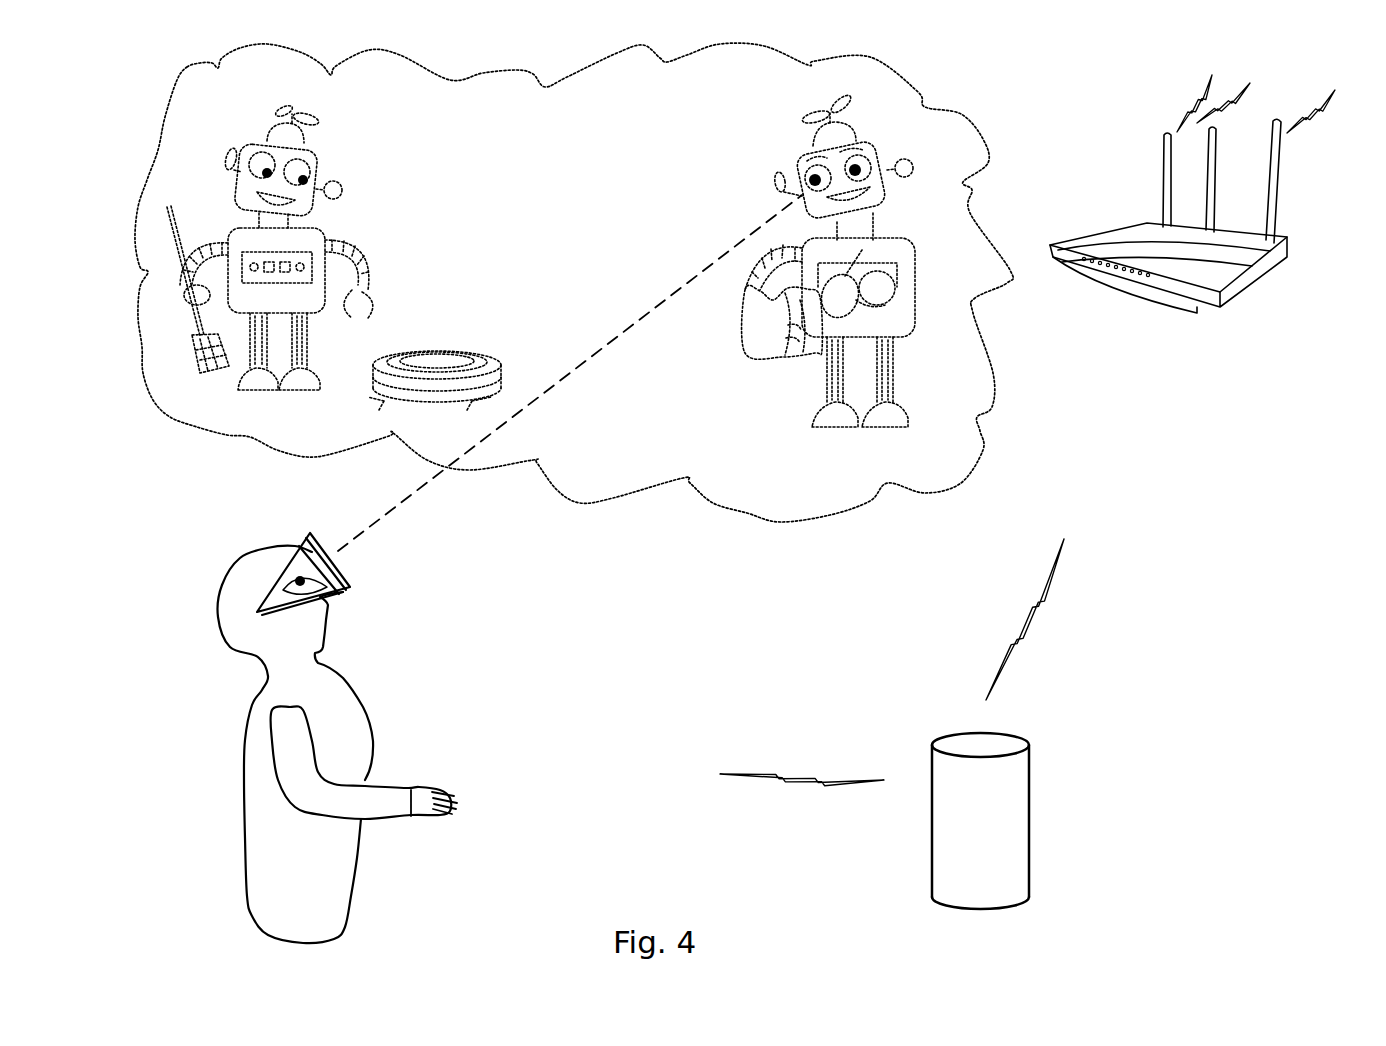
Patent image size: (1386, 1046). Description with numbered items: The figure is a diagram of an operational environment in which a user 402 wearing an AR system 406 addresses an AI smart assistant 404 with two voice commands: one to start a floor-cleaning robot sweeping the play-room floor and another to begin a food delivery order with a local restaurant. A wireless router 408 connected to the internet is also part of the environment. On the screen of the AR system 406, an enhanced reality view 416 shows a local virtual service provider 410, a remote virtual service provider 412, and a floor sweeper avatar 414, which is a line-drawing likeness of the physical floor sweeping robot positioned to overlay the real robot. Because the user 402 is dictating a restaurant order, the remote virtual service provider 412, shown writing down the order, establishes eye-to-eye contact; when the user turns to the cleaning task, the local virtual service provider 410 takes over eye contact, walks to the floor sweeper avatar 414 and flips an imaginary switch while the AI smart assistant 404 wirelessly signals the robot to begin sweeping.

The user 402 is at (247, 550).
The AI smart assistant 404 is at (932, 830).
The AR system 406 is at (311, 533).
The wireless router 408 is at (1140, 293).
The local virtual service provider 410 is at (263, 142).
The remote virtual service provider 412 is at (802, 152).
The floor sweeper avatar 414 is at (472, 352).
The enhanced reality view 416 is at (779, 522).